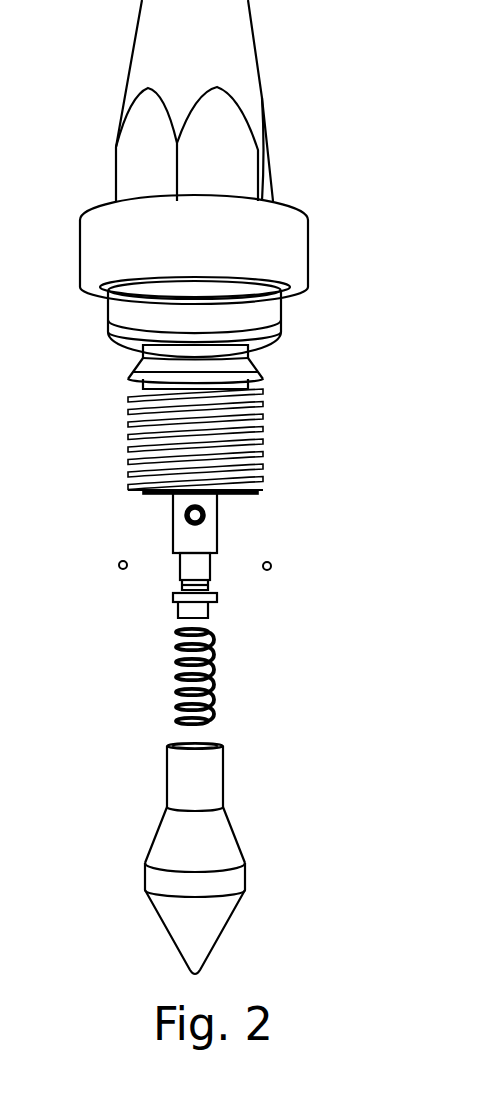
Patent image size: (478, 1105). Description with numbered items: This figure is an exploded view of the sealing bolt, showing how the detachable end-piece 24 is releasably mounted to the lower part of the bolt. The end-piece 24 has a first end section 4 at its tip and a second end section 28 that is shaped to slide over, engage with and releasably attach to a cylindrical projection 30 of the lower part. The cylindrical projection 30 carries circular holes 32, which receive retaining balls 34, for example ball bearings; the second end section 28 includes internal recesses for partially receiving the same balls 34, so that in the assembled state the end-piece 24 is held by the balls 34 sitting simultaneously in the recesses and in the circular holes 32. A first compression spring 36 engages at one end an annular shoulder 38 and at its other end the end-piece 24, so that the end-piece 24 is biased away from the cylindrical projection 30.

The first end section 4 is at (252, 890).
The end-piece 24 is at (235, 829).
The second end section 28 is at (250, 743).
The cylindrical projection 30 is at (217, 537).
The circular holes 32 is at (185, 512).
The retaining balls 34 is at (118, 566).
The first compression spring 36 is at (214, 673).
The annular shoulder 38 is at (172, 597).